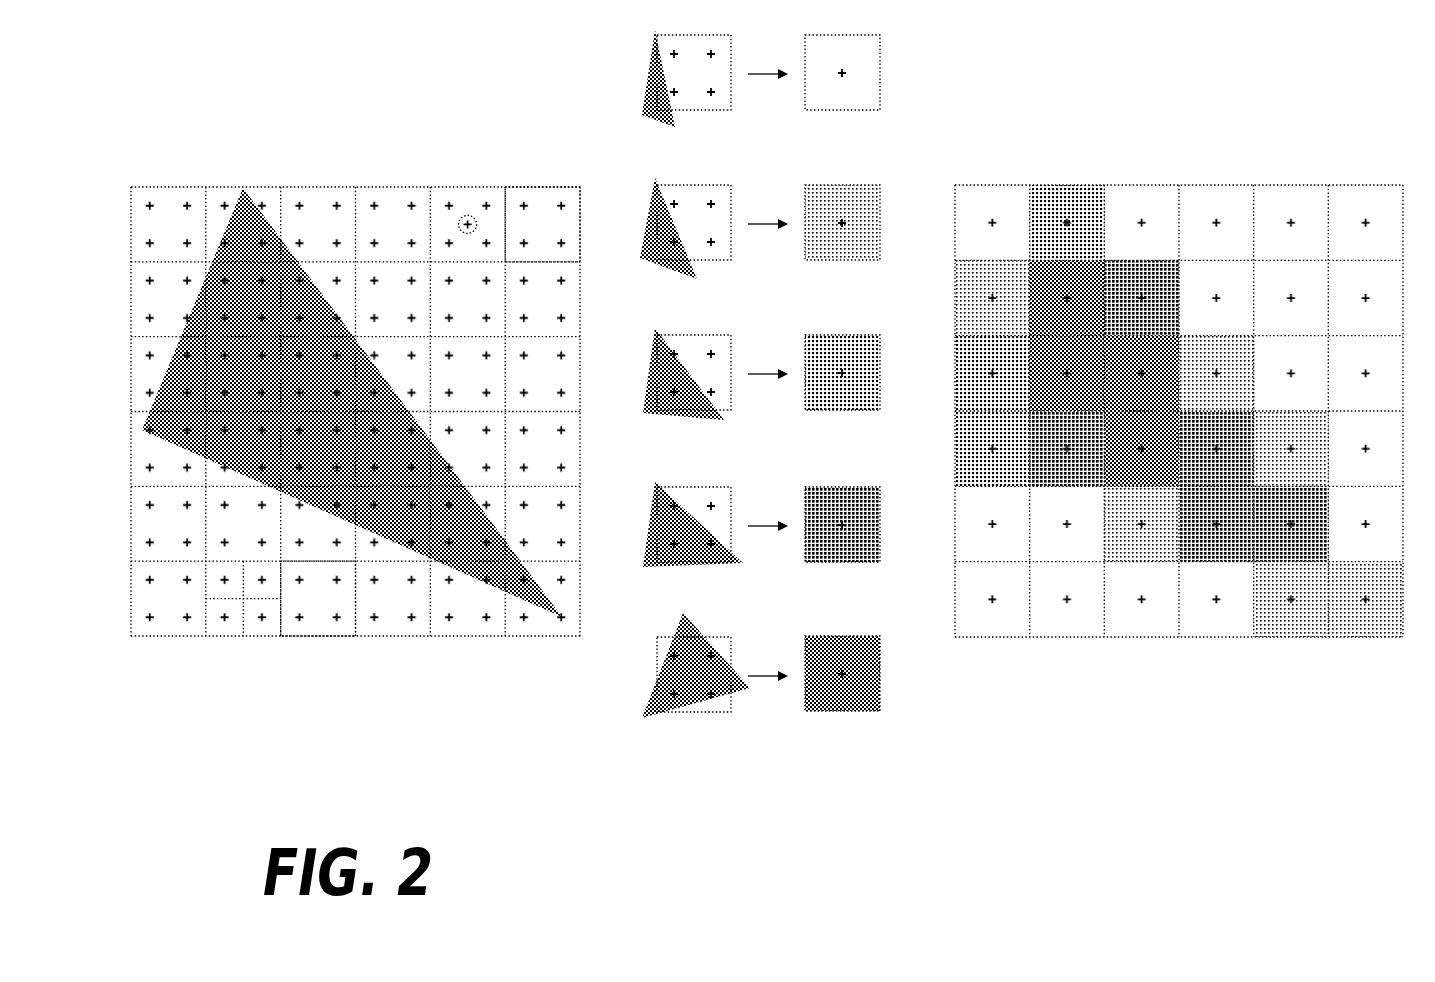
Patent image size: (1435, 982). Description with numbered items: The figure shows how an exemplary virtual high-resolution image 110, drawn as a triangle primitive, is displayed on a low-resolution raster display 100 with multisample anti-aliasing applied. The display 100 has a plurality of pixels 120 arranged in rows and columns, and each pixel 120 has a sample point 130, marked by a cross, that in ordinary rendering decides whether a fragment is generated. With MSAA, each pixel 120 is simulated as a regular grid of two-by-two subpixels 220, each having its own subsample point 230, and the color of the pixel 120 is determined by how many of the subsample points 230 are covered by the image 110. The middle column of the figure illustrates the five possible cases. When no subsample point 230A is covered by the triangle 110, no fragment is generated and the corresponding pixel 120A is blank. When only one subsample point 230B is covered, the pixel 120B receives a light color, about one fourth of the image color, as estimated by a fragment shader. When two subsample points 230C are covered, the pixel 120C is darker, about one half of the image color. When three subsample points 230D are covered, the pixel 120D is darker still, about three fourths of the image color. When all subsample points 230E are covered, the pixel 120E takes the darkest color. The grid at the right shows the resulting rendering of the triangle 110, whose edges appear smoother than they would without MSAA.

The low-resolution raster display 100 is at (348, 163).
The virtual high-resolution image 110 is at (220, 200).
The pixel 120 is at (548, 187).
The sample point 130 is at (461, 214).
The subpixel 220 is at (227, 644).
The subsample point 230 is at (303, 644).
The subsample point 230A is at (711, 112).
The subsample point 230B is at (711, 262).
The subsample points 230C is at (711, 412).
The subsample points 230D is at (711, 564).
The subsample points 230E is at (711, 714).
The pixel 120A is at (843, 112).
The pixel 120B is at (843, 262).
The pixel 120C is at (843, 412).
The pixel 120D is at (843, 564).
The pixel 120E is at (843, 712).